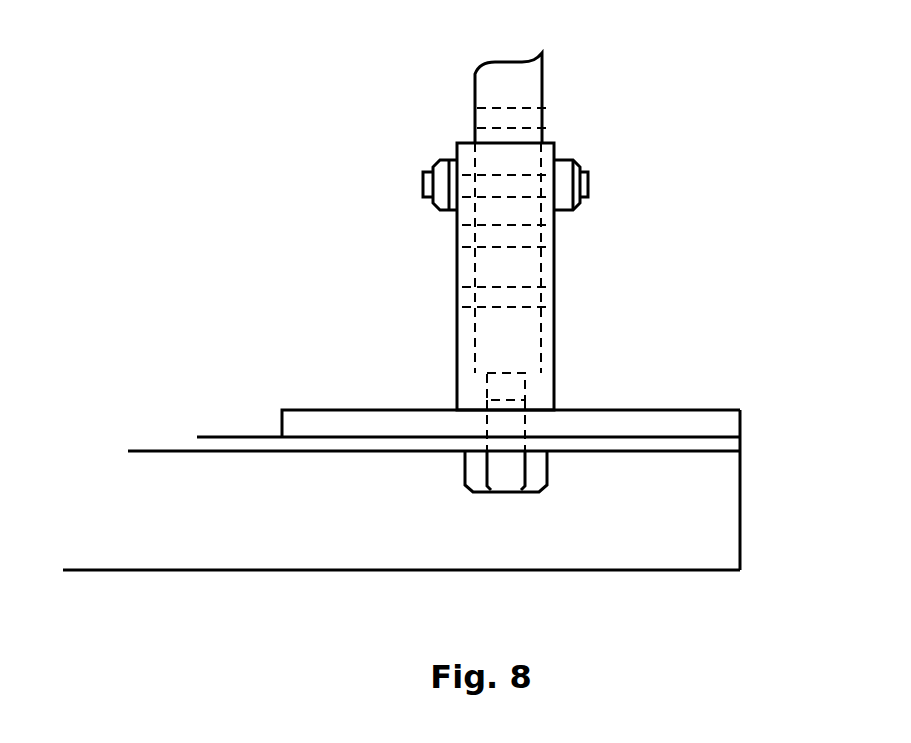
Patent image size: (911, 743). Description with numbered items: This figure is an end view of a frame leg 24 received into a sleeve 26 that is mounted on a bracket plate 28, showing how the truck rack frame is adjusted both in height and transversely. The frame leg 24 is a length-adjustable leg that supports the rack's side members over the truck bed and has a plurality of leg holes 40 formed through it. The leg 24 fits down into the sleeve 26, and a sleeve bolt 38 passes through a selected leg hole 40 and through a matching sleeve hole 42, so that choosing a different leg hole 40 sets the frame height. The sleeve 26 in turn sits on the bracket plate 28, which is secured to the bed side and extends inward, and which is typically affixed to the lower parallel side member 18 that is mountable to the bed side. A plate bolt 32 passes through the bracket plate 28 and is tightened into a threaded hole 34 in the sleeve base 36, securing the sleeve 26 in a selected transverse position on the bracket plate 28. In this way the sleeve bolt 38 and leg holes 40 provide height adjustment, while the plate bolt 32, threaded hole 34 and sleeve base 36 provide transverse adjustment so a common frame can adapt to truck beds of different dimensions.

The lower parallel side member 18 is at (742, 492).
The frame leg 24 is at (535, 83).
The sleeve 26 is at (557, 308).
The bracket plate 28 is at (645, 407).
The plate bolt 32 is at (537, 472).
The threaded hole 34 is at (475, 403).
The sleeve base 36 is at (532, 400).
The sleeve bolt 38 is at (425, 172).
The leg hole 40 is at (493, 105).
The sleeve hole 42 is at (467, 172).